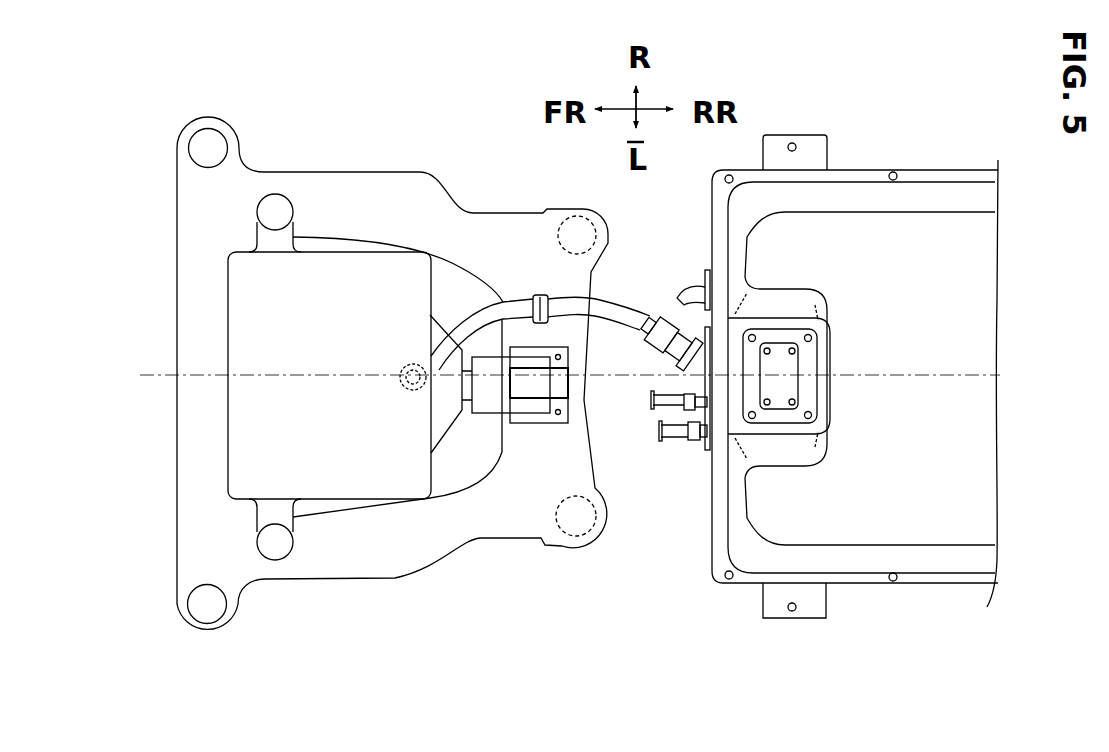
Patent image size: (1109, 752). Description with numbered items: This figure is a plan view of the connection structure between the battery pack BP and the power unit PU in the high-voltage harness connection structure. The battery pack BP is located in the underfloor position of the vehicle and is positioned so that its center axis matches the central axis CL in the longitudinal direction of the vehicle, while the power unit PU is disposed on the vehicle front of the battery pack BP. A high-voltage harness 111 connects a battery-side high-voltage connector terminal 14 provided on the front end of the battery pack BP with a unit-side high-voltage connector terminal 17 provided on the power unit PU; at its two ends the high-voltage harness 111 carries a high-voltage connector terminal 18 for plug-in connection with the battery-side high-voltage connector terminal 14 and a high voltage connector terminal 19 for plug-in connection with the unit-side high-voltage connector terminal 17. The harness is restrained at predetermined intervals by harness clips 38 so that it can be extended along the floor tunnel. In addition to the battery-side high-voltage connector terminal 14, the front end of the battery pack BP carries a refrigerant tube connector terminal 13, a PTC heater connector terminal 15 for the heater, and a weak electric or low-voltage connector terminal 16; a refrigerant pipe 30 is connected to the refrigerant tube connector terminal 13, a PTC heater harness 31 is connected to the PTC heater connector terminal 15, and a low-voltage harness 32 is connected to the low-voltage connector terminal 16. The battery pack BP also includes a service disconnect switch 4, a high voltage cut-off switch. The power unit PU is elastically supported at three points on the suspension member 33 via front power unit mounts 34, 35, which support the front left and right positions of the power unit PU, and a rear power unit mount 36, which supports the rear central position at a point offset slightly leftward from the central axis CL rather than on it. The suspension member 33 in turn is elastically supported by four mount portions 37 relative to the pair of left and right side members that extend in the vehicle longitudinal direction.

The service disconnect switch 4 is at (793, 392).
The refrigerant tube connector terminal 13 is at (706, 268).
The battery-side high-voltage connector terminal 14 is at (666, 366).
The PTC heater connector terminal 15 is at (681, 409).
The low-voltage connector terminal 16 is at (690, 440).
The unit-side high-voltage connector terminal 17 is at (403, 390).
The high-voltage connector terminal 18 is at (664, 322).
The high voltage connector terminal 19 is at (404, 370).
The refrigerant pipe 30 is at (690, 288).
The PTC heater harness 31 is at (651, 400).
The low-voltage harness 32 is at (668, 438).
The suspension member 33 is at (460, 198).
The front power unit mount 34 is at (298, 541).
The front power unit mount 35 is at (297, 205).
The rear power unit mount 36 is at (536, 402).
The mount portion 37 is at (208, 170).
The harness clip 38 is at (540, 294).
The high-voltage harness 111 is at (563, 300).
The power unit PU is at (333, 250).
The battery pack BP is at (867, 167).
The central axis CL is at (888, 372).